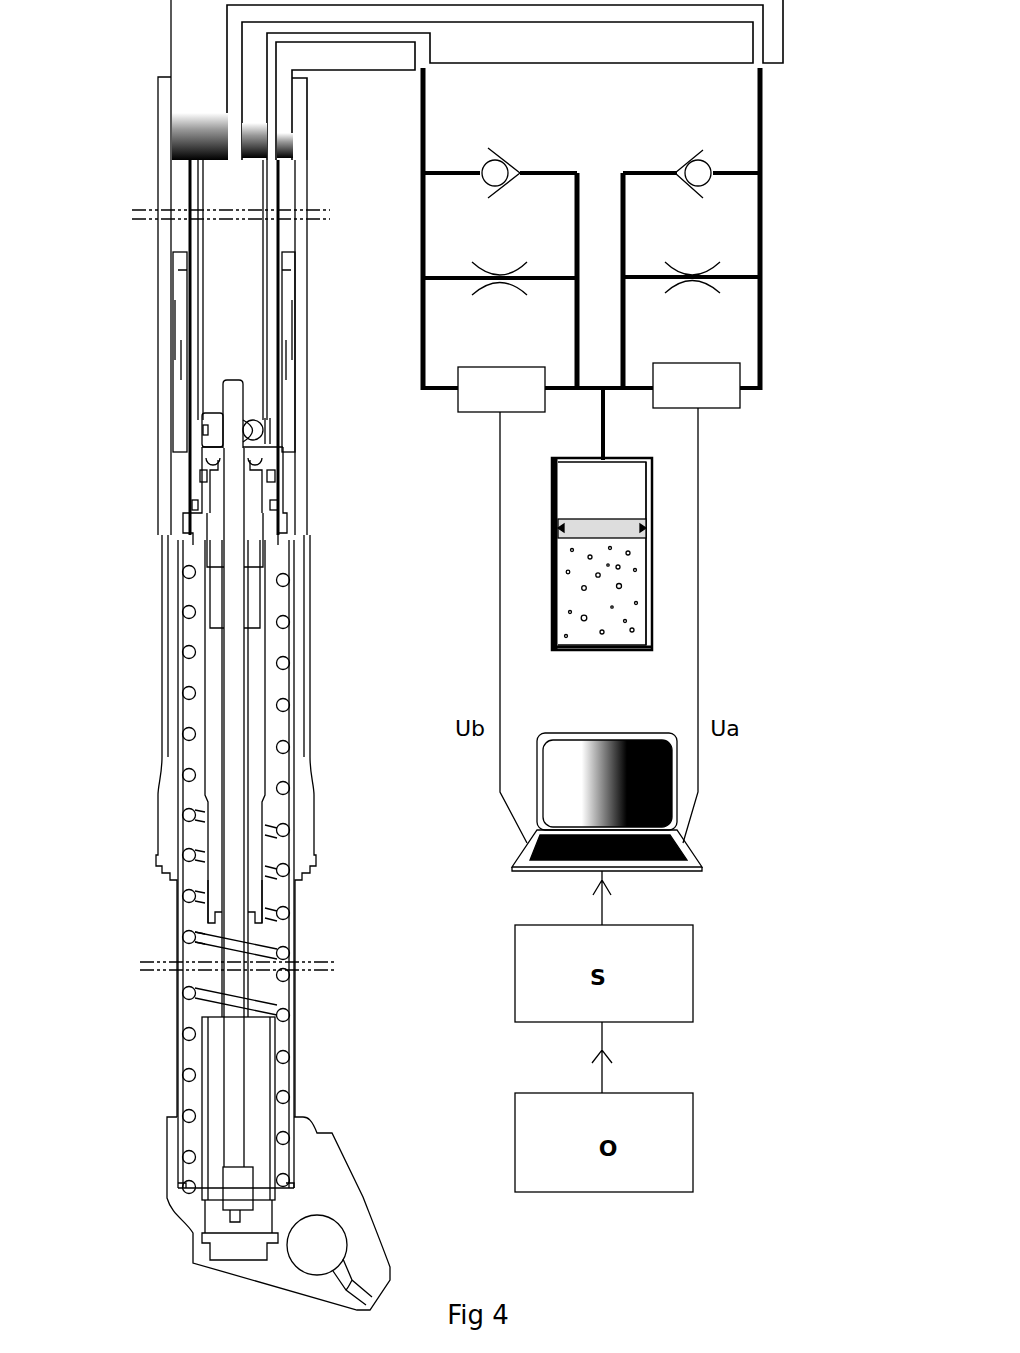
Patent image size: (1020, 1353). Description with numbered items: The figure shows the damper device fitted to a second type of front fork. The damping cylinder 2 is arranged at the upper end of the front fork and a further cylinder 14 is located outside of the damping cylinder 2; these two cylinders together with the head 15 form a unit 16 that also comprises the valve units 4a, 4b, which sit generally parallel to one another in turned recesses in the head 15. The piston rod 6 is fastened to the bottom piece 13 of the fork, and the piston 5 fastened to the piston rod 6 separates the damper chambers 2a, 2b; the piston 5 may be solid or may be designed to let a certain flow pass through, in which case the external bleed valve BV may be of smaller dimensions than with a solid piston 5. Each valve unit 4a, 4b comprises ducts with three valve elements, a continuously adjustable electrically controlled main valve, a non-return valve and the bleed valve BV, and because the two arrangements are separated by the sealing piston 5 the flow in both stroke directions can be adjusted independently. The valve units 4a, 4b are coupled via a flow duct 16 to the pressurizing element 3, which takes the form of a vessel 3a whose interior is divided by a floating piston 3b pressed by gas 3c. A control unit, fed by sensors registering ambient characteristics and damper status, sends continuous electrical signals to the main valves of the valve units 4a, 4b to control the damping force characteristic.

The head 15 is at (183, 40).
The unit / flow duct 16 is at (193, 170).
The damping cylinder 2 is at (200, 330).
The damper chamber 2a is at (230, 307).
The damper chamber 2b is at (210, 497).
The piston 5 is at (217, 423).
The further cylinder 14 is at (188, 430).
The bleed valve BV is at (263, 430).
The piston rod 6 is at (235, 695).
The bottom piece 13 is at (178, 1202).
The valve unit 4a is at (770, 152).
The valve unit 4b is at (417, 153).
The pressurizing element 3 is at (624, 583).
The vessel 3a is at (652, 645).
The floating piston 3b is at (640, 527).
The gas 3c is at (620, 615).